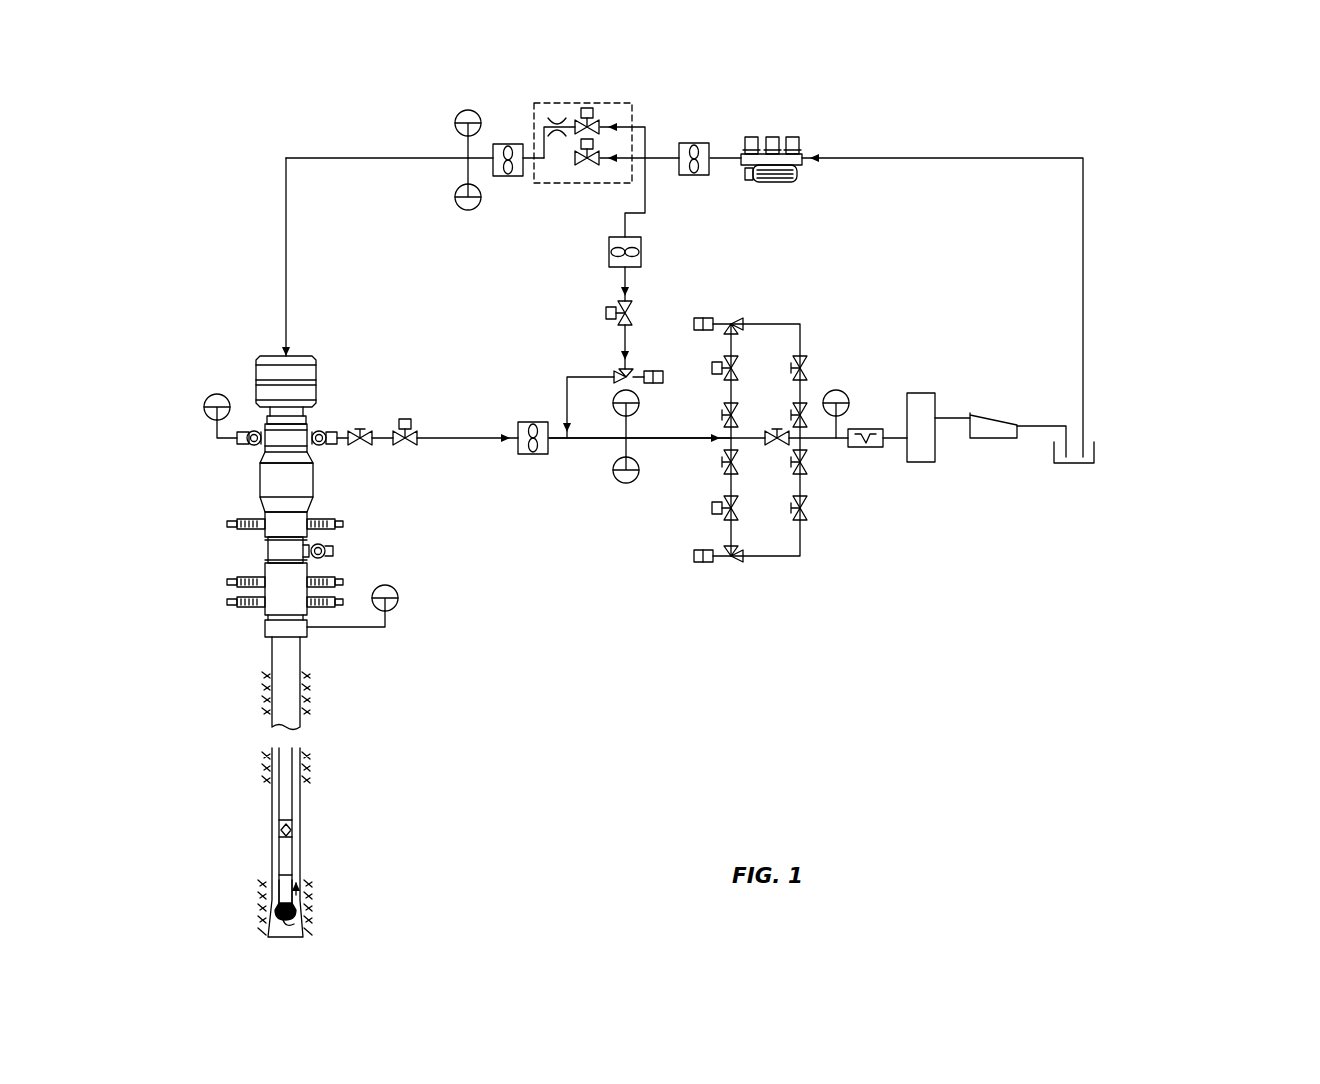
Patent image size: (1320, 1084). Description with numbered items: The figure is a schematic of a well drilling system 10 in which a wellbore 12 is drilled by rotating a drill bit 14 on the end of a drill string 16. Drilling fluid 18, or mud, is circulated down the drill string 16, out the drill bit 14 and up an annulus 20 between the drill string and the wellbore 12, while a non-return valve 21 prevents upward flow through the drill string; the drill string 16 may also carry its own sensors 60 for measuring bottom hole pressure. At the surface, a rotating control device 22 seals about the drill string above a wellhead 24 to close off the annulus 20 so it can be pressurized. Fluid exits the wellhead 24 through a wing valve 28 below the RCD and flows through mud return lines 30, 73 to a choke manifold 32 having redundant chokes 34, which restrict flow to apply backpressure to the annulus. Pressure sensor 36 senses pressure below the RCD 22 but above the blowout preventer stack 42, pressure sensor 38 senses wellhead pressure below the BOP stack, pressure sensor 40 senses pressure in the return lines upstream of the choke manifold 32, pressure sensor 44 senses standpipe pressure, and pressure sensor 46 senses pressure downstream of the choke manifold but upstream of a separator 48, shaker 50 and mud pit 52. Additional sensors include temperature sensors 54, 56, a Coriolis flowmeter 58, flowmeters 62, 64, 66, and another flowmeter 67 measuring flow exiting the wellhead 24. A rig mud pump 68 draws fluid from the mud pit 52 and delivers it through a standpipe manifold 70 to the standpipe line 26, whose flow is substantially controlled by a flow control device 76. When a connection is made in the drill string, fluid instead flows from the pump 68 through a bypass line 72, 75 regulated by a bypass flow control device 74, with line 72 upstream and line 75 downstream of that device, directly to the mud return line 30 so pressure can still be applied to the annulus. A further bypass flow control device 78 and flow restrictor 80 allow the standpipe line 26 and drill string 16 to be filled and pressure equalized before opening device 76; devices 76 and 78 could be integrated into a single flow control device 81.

The well drilling system 10 is at (1197, 190).
The wellbore 12 is at (300, 830).
The drill bit 14 is at (276, 912).
The drill string 16 is at (300, 763).
The drilling fluid 18 is at (880, 160).
The annulus 20 is at (300, 848).
The non-return valve 21 is at (281, 830).
The rotating control device 22 is at (317, 370).
The wellhead 24 is at (260, 628).
The standpipe line 26 is at (340, 156).
The wing valve 28 is at (322, 430).
The mud return line 30 is at (655, 444).
The choke manifold 32 is at (822, 346).
The choke 34 is at (737, 316).
The pressure sensor 36 is at (210, 396).
The pressure sensor 38 is at (397, 585).
The pressure sensor 40 is at (640, 400).
The blowout preventer stack 42 is at (308, 515).
The pressure sensor 44 is at (465, 112).
The pressure sensor 46 is at (845, 392).
The separator 48 is at (925, 393).
The shaker 50 is at (993, 440).
The mud pit 52 is at (1075, 465).
The temperature sensor 54 is at (458, 207).
The temperature sensor 56 is at (618, 480).
The Coriolis flowmeter 58 is at (862, 449).
The drill string sensors 60 is at (293, 868).
The flowmeter 62 is at (701, 176).
The flowmeter 64 is at (641, 247).
The flowmeter 66 is at (520, 176).
The flowmeter 67 is at (545, 455).
The rig mud pump 68 is at (803, 140).
The standpipe manifold 70 is at (652, 128).
The bypass line 72 is at (618, 278).
The mud return line 73 is at (455, 434).
The bypass flow control device 74 is at (633, 370).
The bypass line 75 is at (562, 392).
The flow control device 76 is at (589, 170).
The bypass flow control device 78 is at (586, 108).
The flow restrictor 80 is at (553, 115).
The flow control device 81 is at (632, 104).